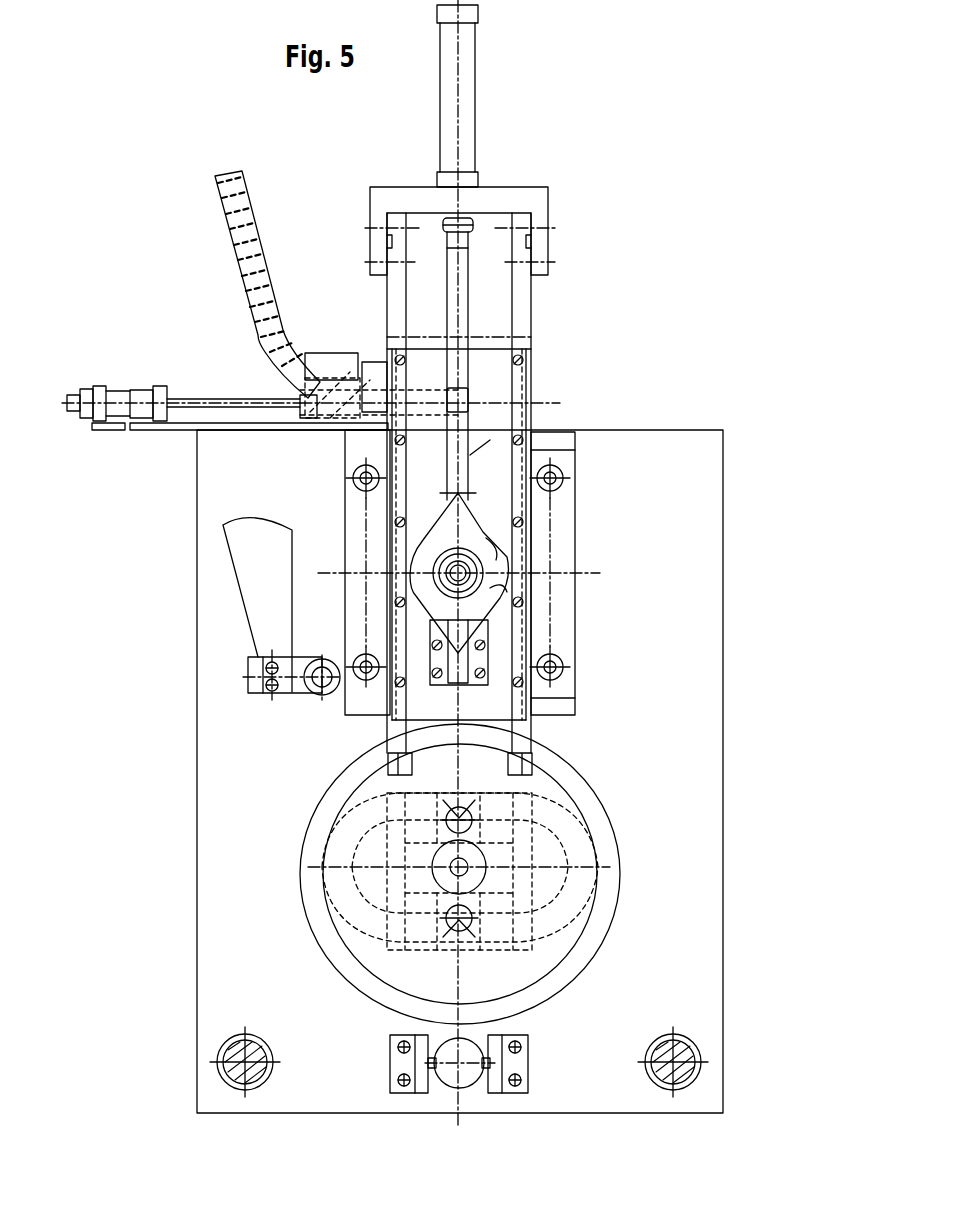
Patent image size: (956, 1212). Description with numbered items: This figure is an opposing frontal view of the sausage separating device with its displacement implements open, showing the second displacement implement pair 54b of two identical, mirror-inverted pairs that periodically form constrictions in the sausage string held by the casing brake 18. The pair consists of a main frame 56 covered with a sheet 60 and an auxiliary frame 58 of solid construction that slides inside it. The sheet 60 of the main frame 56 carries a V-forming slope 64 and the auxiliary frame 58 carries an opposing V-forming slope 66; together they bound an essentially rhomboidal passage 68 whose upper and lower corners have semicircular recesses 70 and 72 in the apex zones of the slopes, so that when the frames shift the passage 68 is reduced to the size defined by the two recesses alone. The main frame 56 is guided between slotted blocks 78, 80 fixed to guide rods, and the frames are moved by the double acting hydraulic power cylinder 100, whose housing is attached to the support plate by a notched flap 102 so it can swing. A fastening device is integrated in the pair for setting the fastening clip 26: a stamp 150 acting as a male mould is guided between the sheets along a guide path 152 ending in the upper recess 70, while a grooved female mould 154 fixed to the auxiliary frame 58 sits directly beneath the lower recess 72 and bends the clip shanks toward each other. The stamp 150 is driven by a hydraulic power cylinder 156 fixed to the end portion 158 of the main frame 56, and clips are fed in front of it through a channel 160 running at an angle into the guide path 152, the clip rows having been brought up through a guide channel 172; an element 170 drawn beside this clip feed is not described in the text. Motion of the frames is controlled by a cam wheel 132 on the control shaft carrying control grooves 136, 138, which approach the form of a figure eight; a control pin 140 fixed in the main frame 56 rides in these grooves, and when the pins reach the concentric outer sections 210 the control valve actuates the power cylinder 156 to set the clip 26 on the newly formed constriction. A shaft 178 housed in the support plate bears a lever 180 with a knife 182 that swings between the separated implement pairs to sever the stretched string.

The hydraulic power cylinder 156 is at (470, 100).
The end portion 158 is at (540, 210).
The stamp 150 is at (465, 287).
The main frame 56 is at (525, 315).
The second displacement implement pair 54b is at (540, 356).
The fastening clip 26 is at (470, 392).
The guide path 152 is at (480, 425).
The sheet 60 is at (490, 435).
The slotted block 80 is at (565, 462).
The semicircular recess 70 is at (520, 490).
The slotted block 78 is at (350, 500).
The V-forming slope 64 is at (495, 545).
The casing brake 18 is at (495, 560).
The V-forming slope 66 is at (470, 575).
The rhomboidal passage 68 is at (432, 540).
The semicircular recess 72 is at (480, 620).
The female mould 154 is at (470, 650).
The auxiliary frame 58 is at (500, 715).
The control pin 140 is at (478, 815).
The outer section 210 is at (577, 843).
The control groove 136 is at (570, 908).
The control groove 138 is at (460, 866).
The cam wheel 132 is at (565, 938).
The flap 102 is at (428, 1085).
The double acting hydraulic power cylinder 100 is at (470, 1075).
The hand lever 170 is at (232, 238).
The channel 160 is at (420, 405).
The guide channel 172 is at (388, 426).
The knife 182 is at (262, 595).
The lever 180 is at (300, 692).
The shaft 178 is at (312, 695).